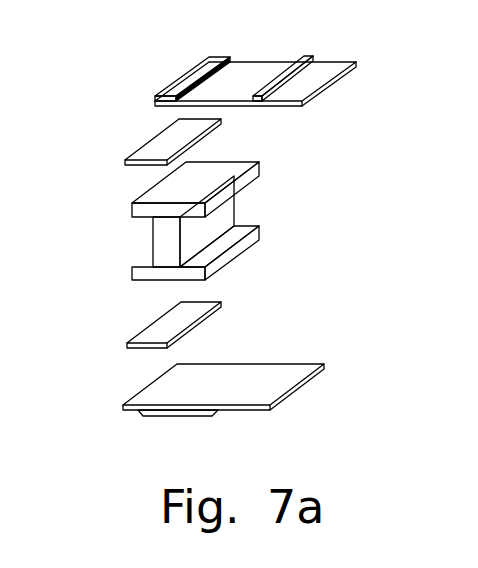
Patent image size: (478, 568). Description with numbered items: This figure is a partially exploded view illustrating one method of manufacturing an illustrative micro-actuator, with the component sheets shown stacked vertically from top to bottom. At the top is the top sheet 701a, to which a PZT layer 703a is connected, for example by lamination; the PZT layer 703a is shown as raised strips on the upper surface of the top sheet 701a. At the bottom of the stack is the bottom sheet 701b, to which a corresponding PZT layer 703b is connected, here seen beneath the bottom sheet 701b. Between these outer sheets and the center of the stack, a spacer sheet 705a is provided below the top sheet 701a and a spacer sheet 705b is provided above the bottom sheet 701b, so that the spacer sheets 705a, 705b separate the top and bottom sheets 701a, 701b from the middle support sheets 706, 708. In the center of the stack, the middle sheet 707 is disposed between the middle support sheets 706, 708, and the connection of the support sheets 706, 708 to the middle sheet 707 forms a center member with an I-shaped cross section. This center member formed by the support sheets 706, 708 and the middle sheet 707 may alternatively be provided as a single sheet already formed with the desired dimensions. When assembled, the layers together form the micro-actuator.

The top sheet 701a is at (343, 73).
The PZT layer 703a is at (192, 76).
The spacer sheet 705a is at (187, 133).
The middle support sheet 706 is at (255, 173).
The middle sheet 707 is at (230, 217).
The middle support sheet 708 is at (217, 265).
The spacer sheet 705b is at (197, 328).
The bottom sheet 701b is at (258, 393).
The PZT layer 703b is at (167, 415).